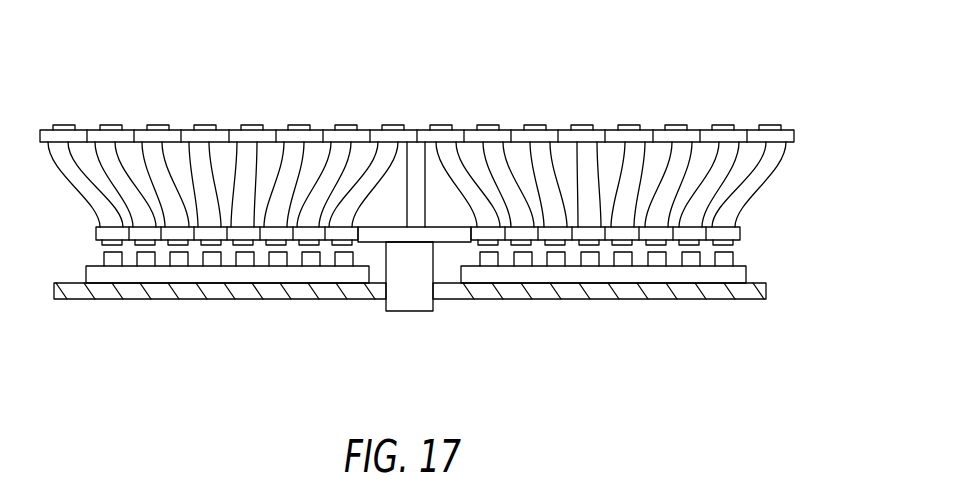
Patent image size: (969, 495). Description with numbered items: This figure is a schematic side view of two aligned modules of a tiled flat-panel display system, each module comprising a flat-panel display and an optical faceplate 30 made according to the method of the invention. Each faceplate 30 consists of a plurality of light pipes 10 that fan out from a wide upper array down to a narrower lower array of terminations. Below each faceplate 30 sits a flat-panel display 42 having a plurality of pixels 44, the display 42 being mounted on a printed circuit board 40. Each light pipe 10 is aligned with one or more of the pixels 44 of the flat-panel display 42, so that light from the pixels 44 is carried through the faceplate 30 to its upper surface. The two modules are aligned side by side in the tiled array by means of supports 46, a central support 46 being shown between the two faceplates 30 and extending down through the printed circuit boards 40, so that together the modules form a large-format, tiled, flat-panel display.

The light pipe 10 is at (776, 182).
The optical faceplate 30 is at (215, 95).
The printed circuit board 40 is at (265, 298).
The flat-panel display 42 is at (323, 275).
The pixels 44 is at (112, 262).
The supports 46 is at (405, 140).